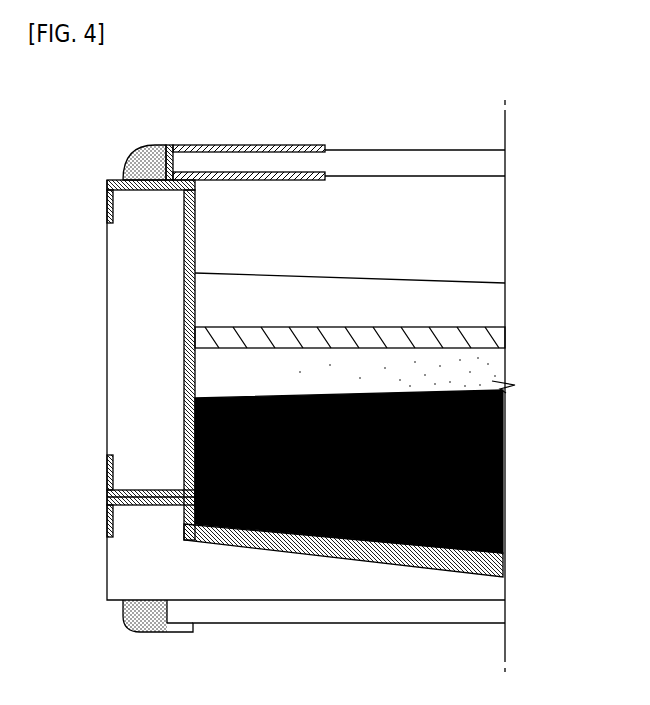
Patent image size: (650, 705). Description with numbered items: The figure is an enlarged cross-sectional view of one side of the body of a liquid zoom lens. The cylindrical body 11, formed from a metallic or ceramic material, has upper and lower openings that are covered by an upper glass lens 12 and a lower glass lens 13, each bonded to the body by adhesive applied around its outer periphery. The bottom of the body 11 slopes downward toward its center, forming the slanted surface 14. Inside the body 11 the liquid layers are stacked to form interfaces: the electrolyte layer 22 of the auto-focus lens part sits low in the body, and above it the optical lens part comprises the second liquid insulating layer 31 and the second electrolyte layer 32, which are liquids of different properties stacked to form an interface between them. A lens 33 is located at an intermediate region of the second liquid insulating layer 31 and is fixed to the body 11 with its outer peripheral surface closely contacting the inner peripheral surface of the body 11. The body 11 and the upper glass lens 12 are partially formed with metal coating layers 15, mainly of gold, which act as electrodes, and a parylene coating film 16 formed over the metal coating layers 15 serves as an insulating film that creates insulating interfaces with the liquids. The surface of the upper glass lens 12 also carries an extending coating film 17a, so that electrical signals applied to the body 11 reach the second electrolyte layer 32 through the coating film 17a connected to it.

The cylindrical body 11 is at (118, 387).
The upper glass lens 12 is at (426, 158).
The lower glass lens 13 is at (312, 612).
The slanted surface 14 is at (433, 568).
The metal coating layer 15 is at (184, 252).
The parylene coating film 16 is at (121, 178).
The extending coating film 17a is at (287, 143).
The electrolyte layer 22 is at (500, 478).
The second liquid insulating layer 31 is at (500, 308).
The second electrolyte layer 32 is at (499, 230).
The lens 33 is at (500, 337).